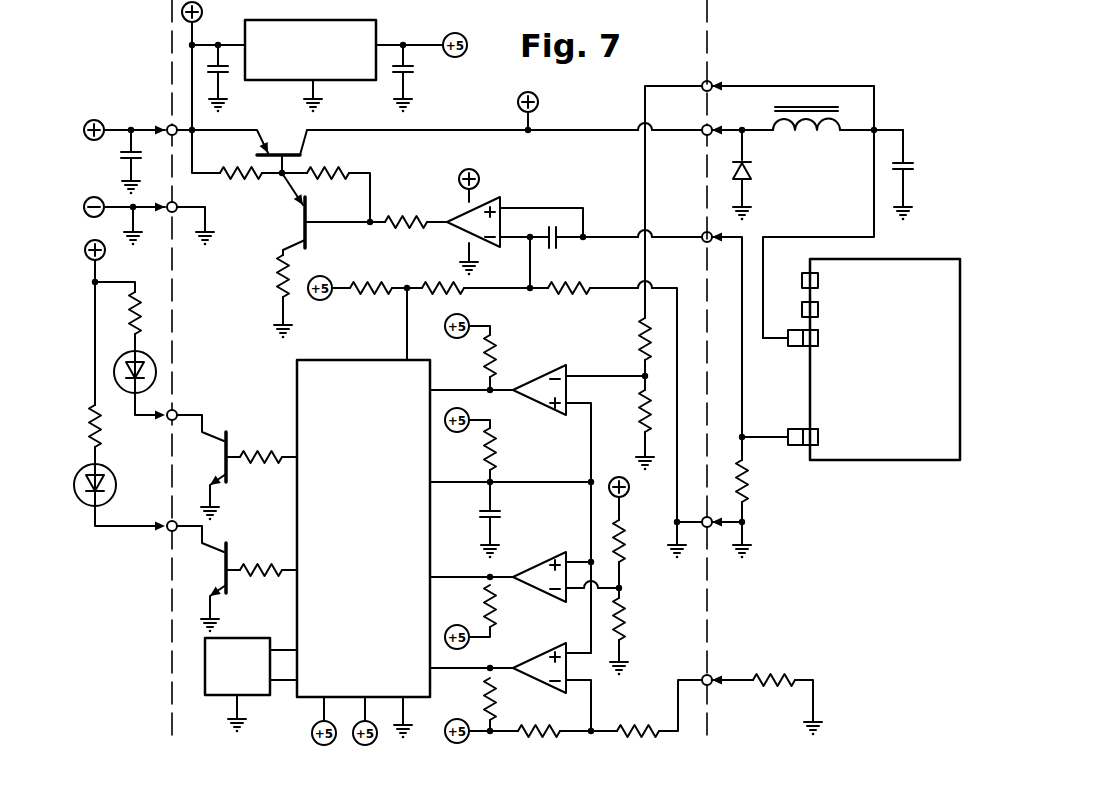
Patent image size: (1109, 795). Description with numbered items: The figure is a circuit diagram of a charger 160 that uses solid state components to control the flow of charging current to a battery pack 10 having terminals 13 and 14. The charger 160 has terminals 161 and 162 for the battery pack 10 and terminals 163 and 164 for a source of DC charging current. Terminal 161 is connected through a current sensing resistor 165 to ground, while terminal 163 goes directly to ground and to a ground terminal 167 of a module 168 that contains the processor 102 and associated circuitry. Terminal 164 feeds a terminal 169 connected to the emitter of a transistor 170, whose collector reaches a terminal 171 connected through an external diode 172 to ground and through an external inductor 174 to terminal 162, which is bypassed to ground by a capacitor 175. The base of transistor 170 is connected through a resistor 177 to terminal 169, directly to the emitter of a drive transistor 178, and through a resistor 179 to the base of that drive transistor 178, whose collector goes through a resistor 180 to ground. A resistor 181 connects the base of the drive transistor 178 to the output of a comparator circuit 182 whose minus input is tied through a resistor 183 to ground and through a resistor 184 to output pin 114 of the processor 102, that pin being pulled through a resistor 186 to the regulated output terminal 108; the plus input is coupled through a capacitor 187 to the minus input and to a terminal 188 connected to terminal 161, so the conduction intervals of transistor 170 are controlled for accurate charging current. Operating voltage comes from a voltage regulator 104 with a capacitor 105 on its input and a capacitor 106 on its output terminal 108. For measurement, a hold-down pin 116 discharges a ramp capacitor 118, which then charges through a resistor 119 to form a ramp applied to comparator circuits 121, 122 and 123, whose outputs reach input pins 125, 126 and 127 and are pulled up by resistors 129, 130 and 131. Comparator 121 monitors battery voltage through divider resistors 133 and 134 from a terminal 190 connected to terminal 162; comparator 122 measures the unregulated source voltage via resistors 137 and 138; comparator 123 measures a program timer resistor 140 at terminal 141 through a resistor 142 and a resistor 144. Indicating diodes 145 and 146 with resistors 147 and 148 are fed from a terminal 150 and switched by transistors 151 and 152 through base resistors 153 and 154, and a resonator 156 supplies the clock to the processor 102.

The battery pack 10 is at (888, 462).
The terminal 13 is at (803, 447).
The terminal 14 is at (820, 345).
The microprocessor 102 is at (297, 378).
The voltage regulator 104 is at (326, 83).
The capacitor 105 is at (226, 76).
The capacitor 106 is at (410, 75).
The output terminal 108 is at (462, 57).
The output pin 114 is at (405, 358).
The hold-down output pin 116 is at (434, 482).
The ramp capacitor 118 is at (503, 506).
The resistor 119 is at (498, 448).
The comparator circuit 121 is at (514, 398).
The comparator circuit 122 is at (540, 558).
The comparator circuit 123 is at (546, 653).
The input pin 125 is at (434, 389).
The input pin 126 is at (434, 577).
The input pin 127 is at (433, 672).
The resistor 129 is at (494, 360).
The resistor 130 is at (495, 604).
The resistor 131 is at (493, 700).
The resistor 133 is at (645, 415).
The resistor 134 is at (645, 336).
The resistor 137 is at (621, 610).
The resistor 138 is at (621, 560).
The program timer resistor 140 is at (777, 678).
The terminal 141 is at (711, 674).
The resistor 142 is at (622, 727).
The resistor 144 is at (542, 727).
The indicating diode 145 is at (158, 362).
The indicating diode 146 is at (116, 492).
The resistor 147 is at (142, 326).
The resistor 148 is at (100, 430).
The terminal 150 is at (105, 252).
The transistor 151 is at (229, 436).
The transistor 152 is at (229, 562).
The resistor 153 is at (262, 468).
The resistor 154 is at (262, 585).
The resonator 156 is at (220, 700).
The charger 160 is at (876, 70).
The terminal 161 is at (792, 428).
The terminal 162 is at (796, 347).
The terminal 163 is at (100, 191).
The terminal 164 is at (95, 120).
The current sensing resistor 165 is at (750, 490).
The ground terminal 167 is at (174, 215).
The module 168 is at (718, 61).
The terminal 169 is at (168, 125).
The transistor 170 is at (302, 158).
The terminal 171 is at (701, 125).
The diode 172 is at (752, 174).
The inductor 174 is at (800, 135).
The capacitor 175 is at (906, 160).
The resistor 177 is at (242, 180).
The drive transistor 178 is at (307, 232).
The resistor 179 is at (330, 180).
The resistor 180 is at (280, 284).
The resistor 181 is at (406, 220).
The comparator circuit 182 is at (478, 198).
The resistor 183 is at (565, 292).
The resistor 184 is at (434, 285).
The resistor 186 is at (370, 296).
The capacitor 187 is at (559, 245).
The terminal 188 is at (702, 230).
The terminal 190 is at (701, 81).